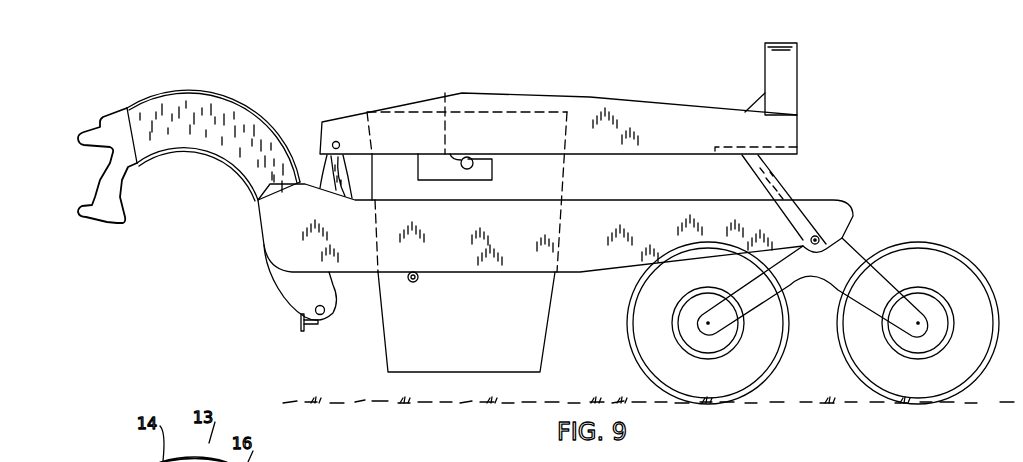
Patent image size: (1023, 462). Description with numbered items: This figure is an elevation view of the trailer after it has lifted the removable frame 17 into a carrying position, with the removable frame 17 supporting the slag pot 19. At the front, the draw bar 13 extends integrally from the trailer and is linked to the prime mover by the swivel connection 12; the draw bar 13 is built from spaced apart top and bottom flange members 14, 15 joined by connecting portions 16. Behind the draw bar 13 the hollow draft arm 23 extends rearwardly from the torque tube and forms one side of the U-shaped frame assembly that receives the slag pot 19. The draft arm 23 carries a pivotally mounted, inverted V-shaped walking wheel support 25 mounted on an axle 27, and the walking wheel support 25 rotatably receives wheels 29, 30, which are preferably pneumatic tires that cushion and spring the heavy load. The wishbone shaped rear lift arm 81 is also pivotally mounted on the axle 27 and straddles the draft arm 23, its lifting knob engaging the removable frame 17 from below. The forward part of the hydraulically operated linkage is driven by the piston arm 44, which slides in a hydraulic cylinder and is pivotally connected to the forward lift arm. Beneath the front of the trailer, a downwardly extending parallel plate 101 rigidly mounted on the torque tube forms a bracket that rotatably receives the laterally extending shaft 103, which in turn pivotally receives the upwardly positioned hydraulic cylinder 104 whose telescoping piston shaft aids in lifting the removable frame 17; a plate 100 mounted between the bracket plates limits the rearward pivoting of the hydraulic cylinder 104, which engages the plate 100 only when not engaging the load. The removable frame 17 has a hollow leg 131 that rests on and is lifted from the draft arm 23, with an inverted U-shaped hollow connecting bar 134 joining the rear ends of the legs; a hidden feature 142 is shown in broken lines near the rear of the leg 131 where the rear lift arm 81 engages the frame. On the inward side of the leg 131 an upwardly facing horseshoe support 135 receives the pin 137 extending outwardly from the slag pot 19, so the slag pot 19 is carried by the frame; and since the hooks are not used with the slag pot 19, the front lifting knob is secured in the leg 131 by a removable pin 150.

The swivel connection 12 is at (76, 154).
The draw bar 13 is at (218, 74).
The top flange member 14 is at (187, 89).
The bottom flange member 15 is at (185, 150).
The connecting portions 16 is at (223, 114).
The removable frame 17 is at (596, 88).
The slag pot 19 is at (395, 337).
The draft arm 23 is at (352, 259).
The walking wheel support 25 is at (867, 293).
The axle 27 is at (806, 252).
The wheel 29 is at (760, 378).
The wheel 30 is at (960, 378).
The piston arm 44 is at (401, 281).
The rear lift arm 81 is at (804, 185).
The plate 100 is at (303, 331).
The parallel plate 101 is at (280, 274).
The shaft 103 is at (317, 307).
The hydraulic cylinder 104 is at (320, 180).
The leg 131 is at (690, 121).
The connecting bar 134 is at (797, 67).
The horseshoe support 135 is at (432, 169).
The pin 137 is at (471, 169).
The hidden slot 142 is at (777, 148).
The removable pin 150 is at (337, 141).